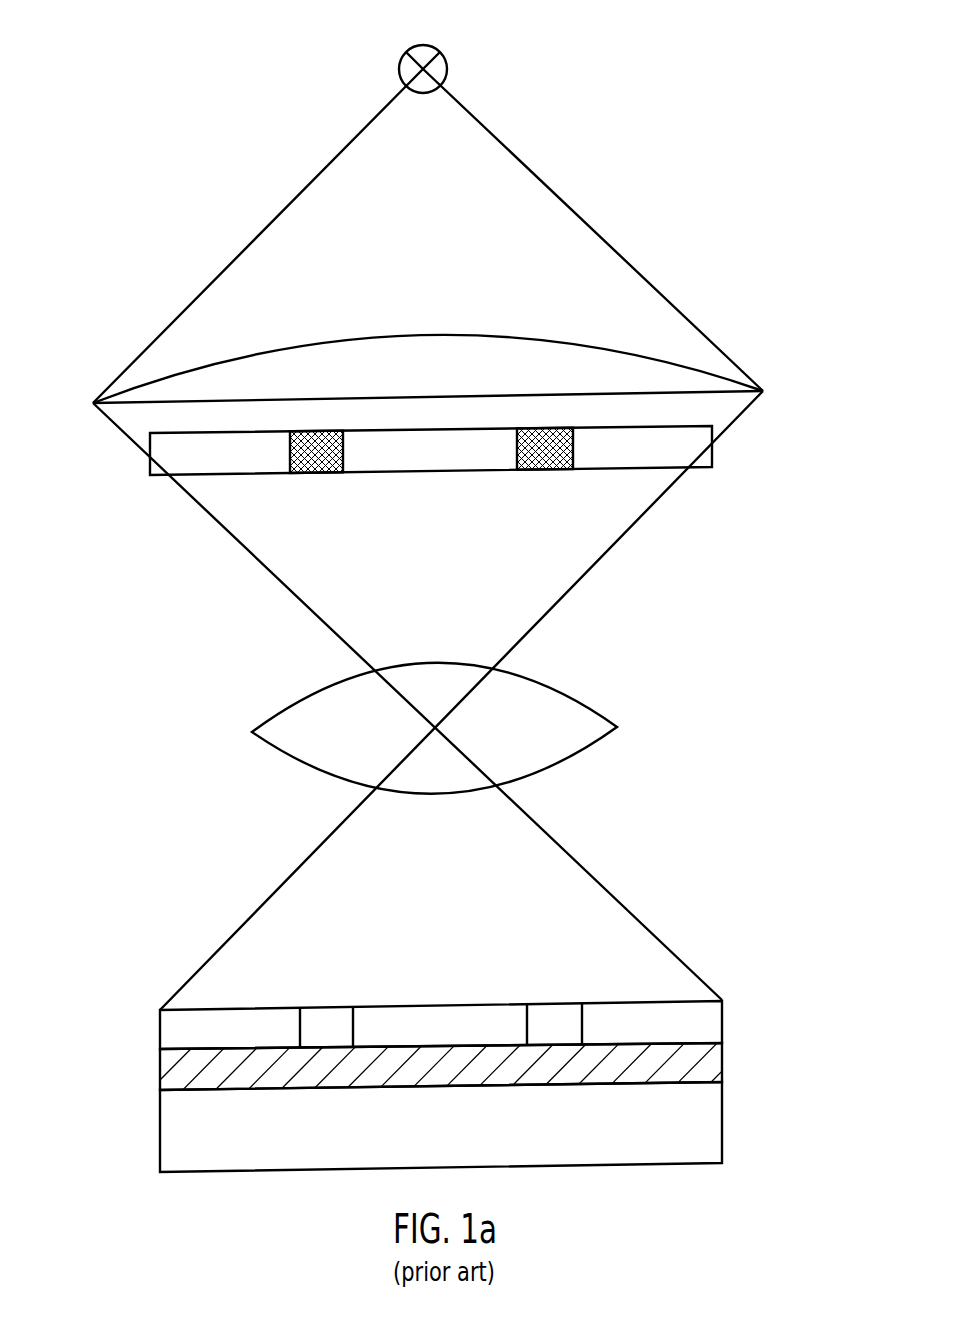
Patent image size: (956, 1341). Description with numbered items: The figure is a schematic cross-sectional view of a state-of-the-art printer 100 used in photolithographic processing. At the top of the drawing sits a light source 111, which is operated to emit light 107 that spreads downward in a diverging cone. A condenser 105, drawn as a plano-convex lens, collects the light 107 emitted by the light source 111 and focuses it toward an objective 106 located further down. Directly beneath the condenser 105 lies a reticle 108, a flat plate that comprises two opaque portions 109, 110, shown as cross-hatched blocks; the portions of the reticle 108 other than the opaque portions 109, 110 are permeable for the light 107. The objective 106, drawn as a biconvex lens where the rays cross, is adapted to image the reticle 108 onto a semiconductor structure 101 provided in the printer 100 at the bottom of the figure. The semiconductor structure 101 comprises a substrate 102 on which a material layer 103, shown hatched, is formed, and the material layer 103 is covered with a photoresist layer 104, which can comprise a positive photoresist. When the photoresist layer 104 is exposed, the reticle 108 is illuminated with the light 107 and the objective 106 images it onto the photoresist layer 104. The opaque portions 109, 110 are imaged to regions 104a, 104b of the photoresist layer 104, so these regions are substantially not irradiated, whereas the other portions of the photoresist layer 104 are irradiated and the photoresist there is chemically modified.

The printer 100 is at (750, 46).
The semiconductor structure 101 is at (430, 1062).
The substrate 102 is at (160, 1136).
The material layer 103 is at (160, 1066).
The photoresist layer 104 is at (485, 1001).
The region of the photoresist layer 104a is at (325, 1006).
The region of the photoresist layer 104b is at (551, 1004).
The condenser 105 is at (766, 391).
The objective 106 is at (577, 690).
The light 107 is at (622, 253).
The reticle 108 is at (484, 479).
The opaque portion 109 is at (318, 476).
The opaque portion 110 is at (540, 472).
The light source 111 is at (448, 64).